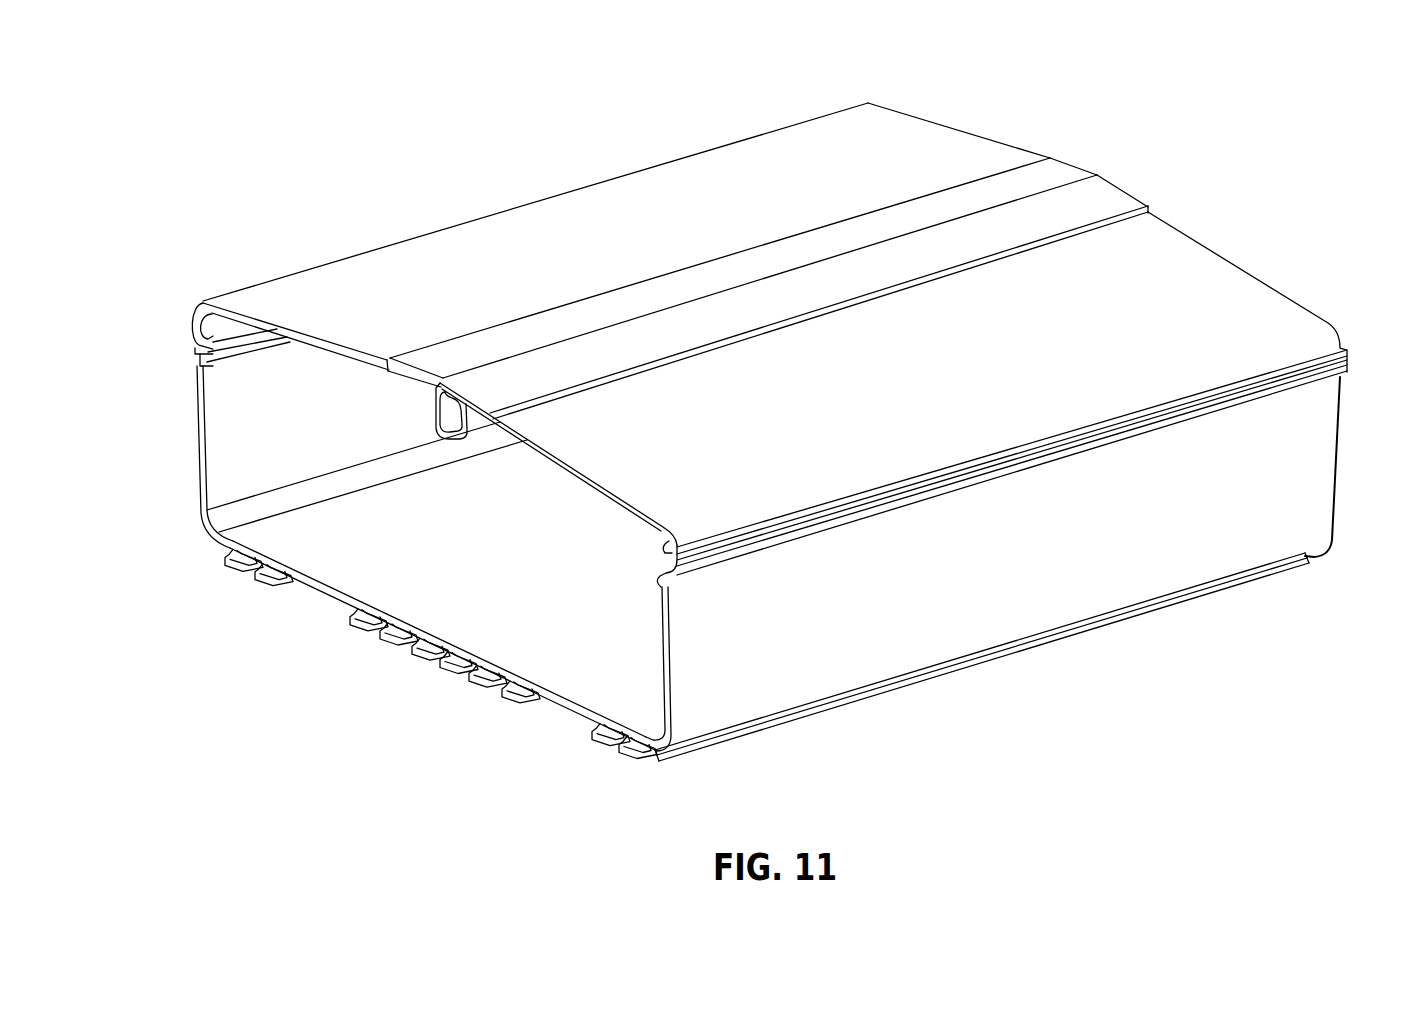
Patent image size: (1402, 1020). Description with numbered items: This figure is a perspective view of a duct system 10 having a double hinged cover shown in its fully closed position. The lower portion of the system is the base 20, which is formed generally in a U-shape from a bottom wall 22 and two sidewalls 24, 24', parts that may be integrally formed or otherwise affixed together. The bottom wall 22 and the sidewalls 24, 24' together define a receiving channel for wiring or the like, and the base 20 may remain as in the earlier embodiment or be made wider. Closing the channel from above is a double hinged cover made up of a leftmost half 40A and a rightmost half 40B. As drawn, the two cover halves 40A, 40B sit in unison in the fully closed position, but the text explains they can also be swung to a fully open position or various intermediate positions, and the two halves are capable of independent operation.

The duct system 10 is at (1105, 135).
The base 20 is at (299, 597).
The bottom wall 22 is at (516, 626).
The sidewall 24 is at (190, 448).
The sidewall 24' is at (996, 565).
The leftmost half 40A is at (508, 233).
The rightmost half 40B is at (1083, 321).